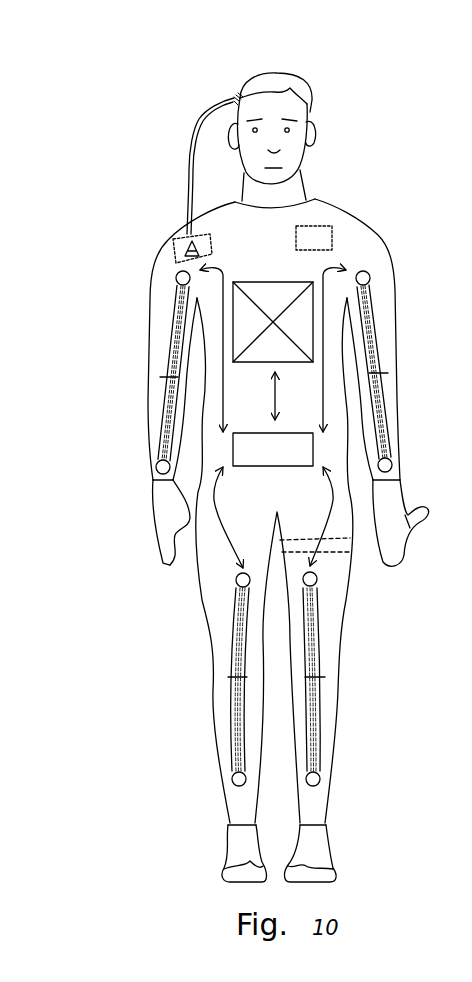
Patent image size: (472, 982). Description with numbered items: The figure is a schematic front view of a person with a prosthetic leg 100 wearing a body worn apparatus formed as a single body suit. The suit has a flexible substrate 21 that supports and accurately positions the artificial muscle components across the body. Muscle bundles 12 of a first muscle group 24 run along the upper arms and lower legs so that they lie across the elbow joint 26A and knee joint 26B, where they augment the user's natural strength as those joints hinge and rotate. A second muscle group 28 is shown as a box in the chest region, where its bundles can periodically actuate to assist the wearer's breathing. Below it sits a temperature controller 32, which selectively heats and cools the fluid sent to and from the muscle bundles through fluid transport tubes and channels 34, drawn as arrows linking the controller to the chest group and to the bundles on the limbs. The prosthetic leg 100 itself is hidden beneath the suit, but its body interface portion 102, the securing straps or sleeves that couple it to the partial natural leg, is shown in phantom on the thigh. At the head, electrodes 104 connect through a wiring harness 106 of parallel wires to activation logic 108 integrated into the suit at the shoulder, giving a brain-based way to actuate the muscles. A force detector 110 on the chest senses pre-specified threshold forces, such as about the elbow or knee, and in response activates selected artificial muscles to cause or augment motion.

The muscle bundle 12 is at (274, 528).
The first muscle group 24 is at (170, 322).
The second muscle group 28 is at (272, 302).
The temperature controller 32 is at (306, 463).
The fluid transport tubes and channels 34 is at (317, 273).
The elbow joint 26A is at (132, 397).
The knee joint 26B is at (192, 659).
The substrate 21 is at (343, 222).
The prosthetic leg 100 is at (380, 612).
The body interface portion 102 is at (340, 548).
The electrodes 104 is at (231, 93).
The wiring harness 106 is at (188, 141).
The activation logic 108 is at (175, 246).
The force detector 110 is at (331, 250).